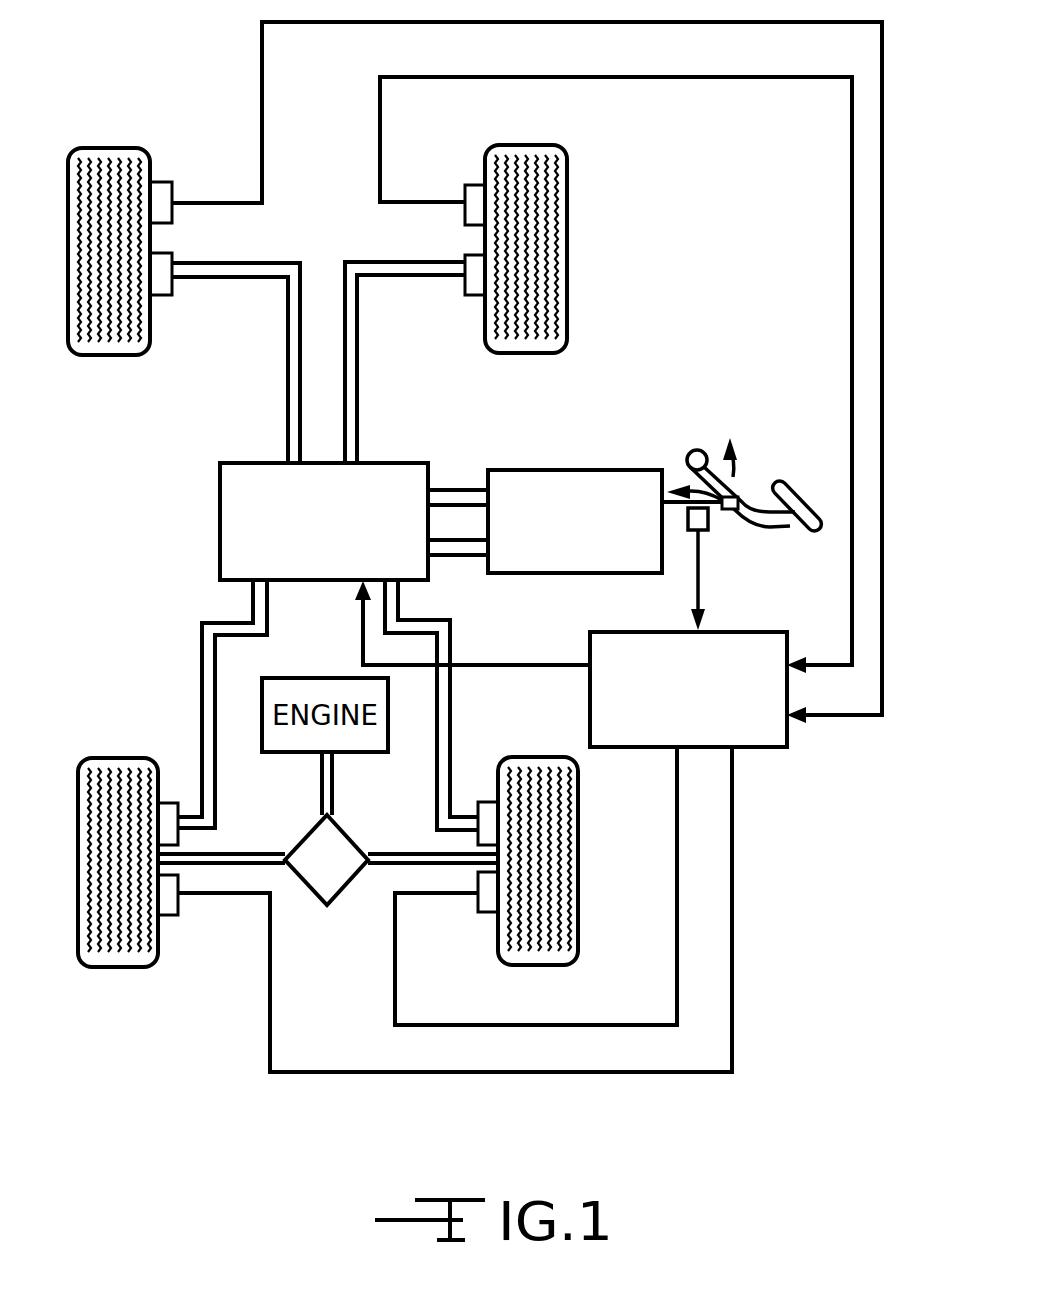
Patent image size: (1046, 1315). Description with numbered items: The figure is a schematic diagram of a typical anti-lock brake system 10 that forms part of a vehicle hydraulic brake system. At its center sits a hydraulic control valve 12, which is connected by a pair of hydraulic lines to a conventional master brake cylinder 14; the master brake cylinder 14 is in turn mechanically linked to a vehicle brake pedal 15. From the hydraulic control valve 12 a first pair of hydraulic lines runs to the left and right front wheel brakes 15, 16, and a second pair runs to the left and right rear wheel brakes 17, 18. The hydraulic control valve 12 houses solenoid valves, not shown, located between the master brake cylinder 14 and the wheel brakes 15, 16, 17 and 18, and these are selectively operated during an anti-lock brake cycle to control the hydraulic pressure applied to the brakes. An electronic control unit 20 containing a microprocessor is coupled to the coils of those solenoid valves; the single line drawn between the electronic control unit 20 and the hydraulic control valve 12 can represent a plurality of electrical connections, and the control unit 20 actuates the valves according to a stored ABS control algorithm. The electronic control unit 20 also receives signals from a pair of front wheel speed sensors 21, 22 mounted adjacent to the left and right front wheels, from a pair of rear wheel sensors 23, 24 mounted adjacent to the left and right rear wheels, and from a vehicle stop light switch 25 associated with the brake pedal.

The anti-lock brake system 10 is at (790, 830).
The hydraulic control valve 12 is at (218, 540).
The master brake cylinder 14 is at (565, 468).
The vehicle brake pedal 15 is at (167, 252).
The right front wheel brake 16 is at (478, 253).
The left rear wheel brake 17 is at (172, 800).
The right rear wheel brake 18 is at (485, 800).
The electronic control unit 20 is at (768, 630).
The wheel speed sensor 21 is at (162, 182).
The wheel speed sensor 22 is at (478, 183).
The rear wheel sensor 23 is at (178, 917).
The rear wheel sensor 24 is at (488, 913).
The vehicle stop light switch 25 is at (690, 532).